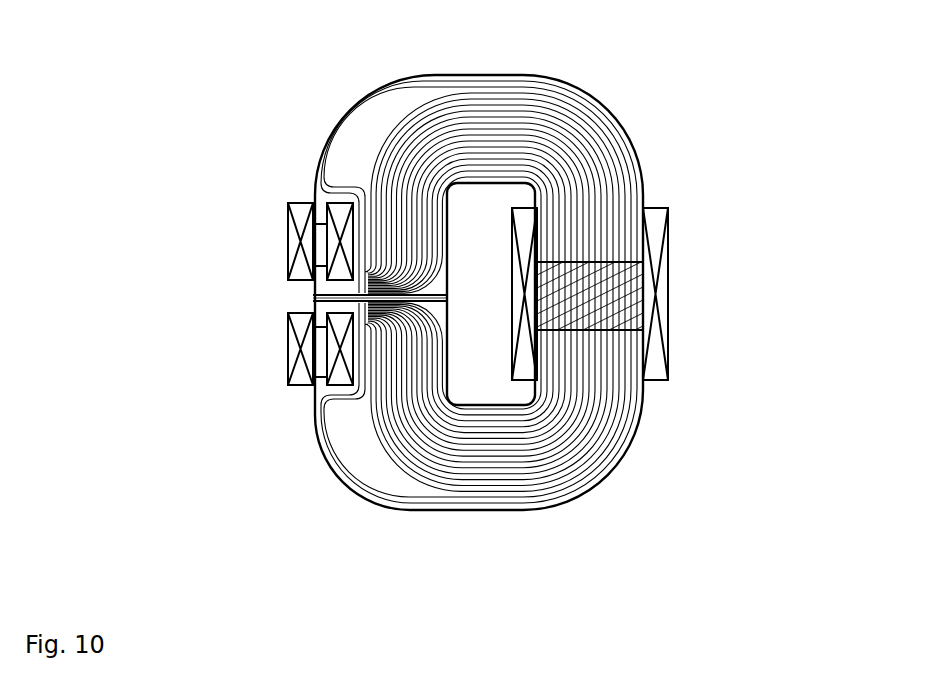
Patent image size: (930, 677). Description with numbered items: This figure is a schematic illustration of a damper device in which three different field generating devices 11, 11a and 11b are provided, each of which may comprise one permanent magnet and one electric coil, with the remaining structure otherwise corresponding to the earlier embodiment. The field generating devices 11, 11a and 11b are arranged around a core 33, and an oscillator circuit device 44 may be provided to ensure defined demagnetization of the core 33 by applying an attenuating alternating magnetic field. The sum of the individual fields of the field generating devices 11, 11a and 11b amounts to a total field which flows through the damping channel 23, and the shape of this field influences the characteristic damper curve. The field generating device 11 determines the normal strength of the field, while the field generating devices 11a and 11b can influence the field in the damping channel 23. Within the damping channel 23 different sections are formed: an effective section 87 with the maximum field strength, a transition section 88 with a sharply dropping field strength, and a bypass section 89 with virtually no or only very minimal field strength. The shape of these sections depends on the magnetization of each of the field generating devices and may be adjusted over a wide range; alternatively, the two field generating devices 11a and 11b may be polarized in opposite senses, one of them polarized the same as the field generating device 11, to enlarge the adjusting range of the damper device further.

The field generating device 11 is at (660, 283).
The field generating device 11a is at (278, 219).
The field generating device 11b is at (274, 356).
The damping channel 23 is at (312, 298).
The core 33 is at (545, 500).
The oscillator circuit device 44 is at (563, 122).
The effective section 87 is at (437, 282).
The transition section 88 is at (342, 387).
The bypass section 89 is at (312, 289).